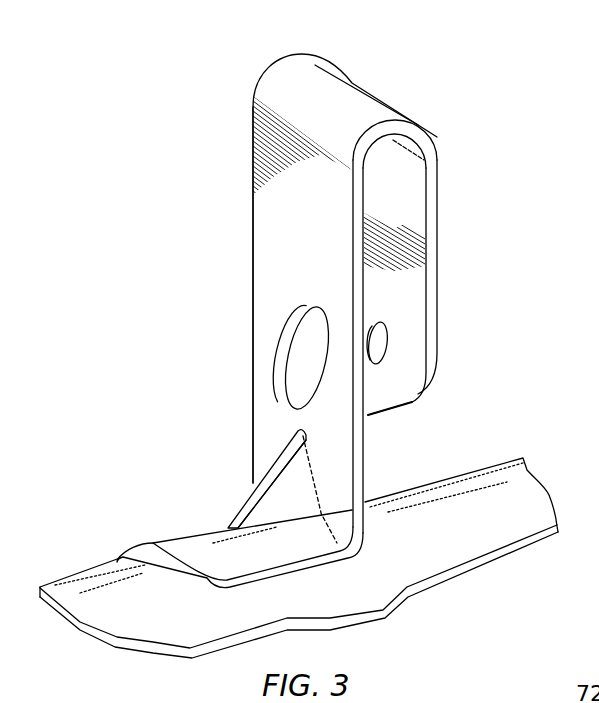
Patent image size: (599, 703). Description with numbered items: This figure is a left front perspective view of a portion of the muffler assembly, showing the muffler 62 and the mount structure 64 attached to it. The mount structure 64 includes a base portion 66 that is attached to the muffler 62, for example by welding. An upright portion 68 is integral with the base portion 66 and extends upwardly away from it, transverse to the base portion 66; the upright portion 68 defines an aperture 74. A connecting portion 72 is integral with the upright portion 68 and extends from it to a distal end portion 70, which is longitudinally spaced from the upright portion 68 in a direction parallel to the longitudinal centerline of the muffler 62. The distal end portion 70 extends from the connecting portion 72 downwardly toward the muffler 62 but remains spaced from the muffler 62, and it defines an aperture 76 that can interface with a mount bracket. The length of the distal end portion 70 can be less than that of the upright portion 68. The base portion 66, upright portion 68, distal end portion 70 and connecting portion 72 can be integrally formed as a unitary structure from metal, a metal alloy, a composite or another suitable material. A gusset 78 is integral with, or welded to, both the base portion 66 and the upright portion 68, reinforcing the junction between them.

The muffler 62 is at (515, 578).
The mount structure 64 is at (304, 308).
The base portion 66 is at (197, 545).
The upright portion 68 is at (259, 238).
The distal end portion 70 is at (431, 280).
The connecting portion 72 is at (352, 84).
The aperture 74 is at (305, 330).
The aperture 76 is at (385, 342).
The gusset 78 is at (253, 496).